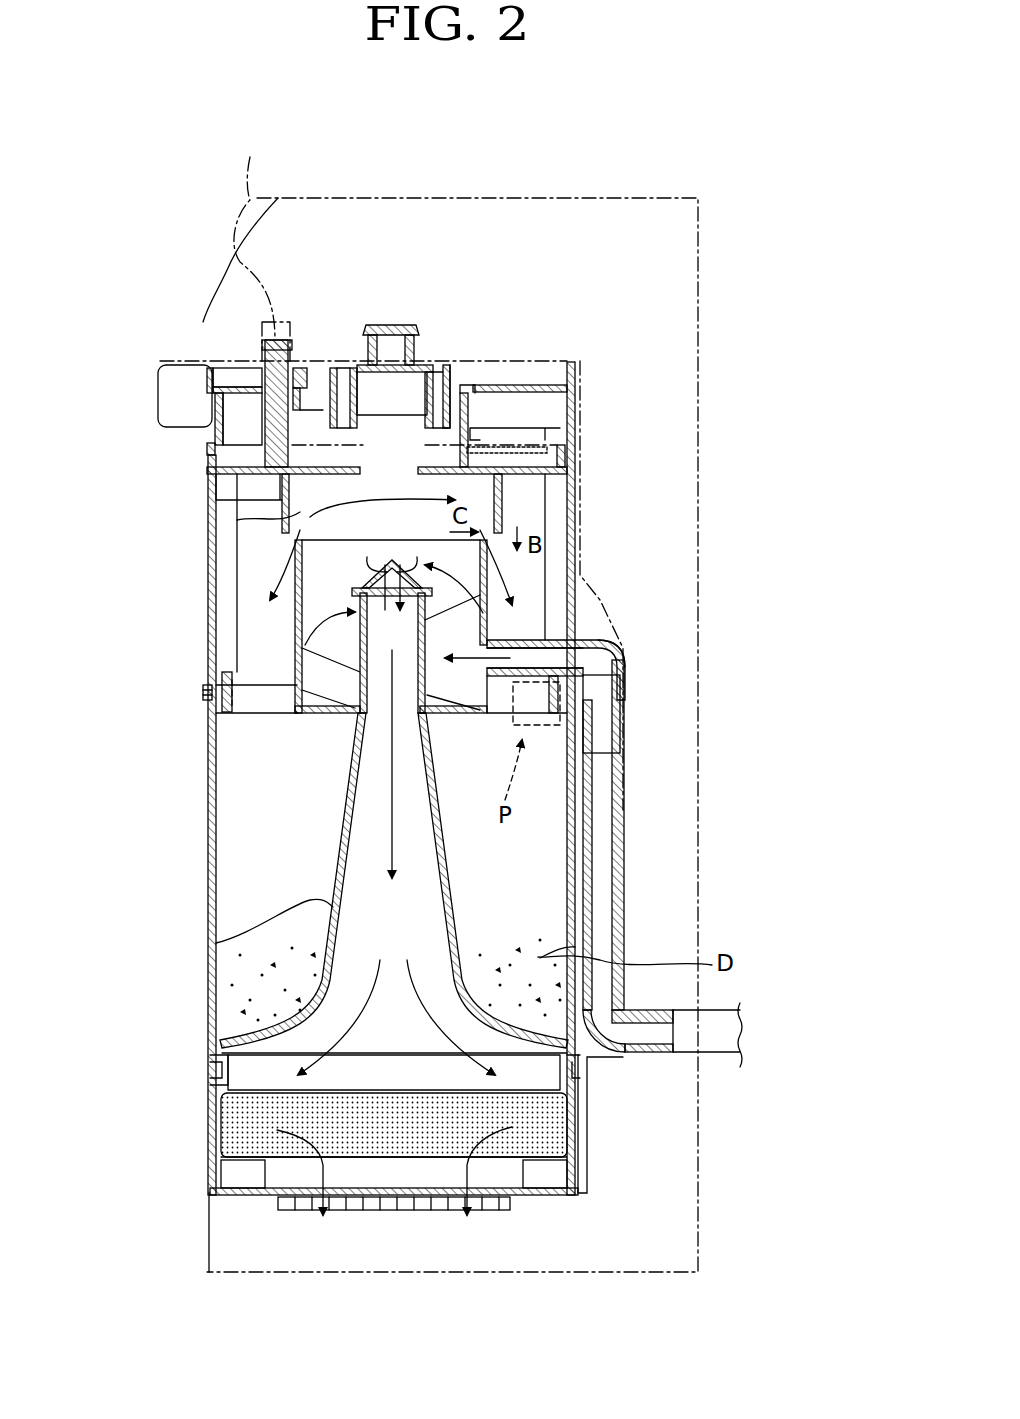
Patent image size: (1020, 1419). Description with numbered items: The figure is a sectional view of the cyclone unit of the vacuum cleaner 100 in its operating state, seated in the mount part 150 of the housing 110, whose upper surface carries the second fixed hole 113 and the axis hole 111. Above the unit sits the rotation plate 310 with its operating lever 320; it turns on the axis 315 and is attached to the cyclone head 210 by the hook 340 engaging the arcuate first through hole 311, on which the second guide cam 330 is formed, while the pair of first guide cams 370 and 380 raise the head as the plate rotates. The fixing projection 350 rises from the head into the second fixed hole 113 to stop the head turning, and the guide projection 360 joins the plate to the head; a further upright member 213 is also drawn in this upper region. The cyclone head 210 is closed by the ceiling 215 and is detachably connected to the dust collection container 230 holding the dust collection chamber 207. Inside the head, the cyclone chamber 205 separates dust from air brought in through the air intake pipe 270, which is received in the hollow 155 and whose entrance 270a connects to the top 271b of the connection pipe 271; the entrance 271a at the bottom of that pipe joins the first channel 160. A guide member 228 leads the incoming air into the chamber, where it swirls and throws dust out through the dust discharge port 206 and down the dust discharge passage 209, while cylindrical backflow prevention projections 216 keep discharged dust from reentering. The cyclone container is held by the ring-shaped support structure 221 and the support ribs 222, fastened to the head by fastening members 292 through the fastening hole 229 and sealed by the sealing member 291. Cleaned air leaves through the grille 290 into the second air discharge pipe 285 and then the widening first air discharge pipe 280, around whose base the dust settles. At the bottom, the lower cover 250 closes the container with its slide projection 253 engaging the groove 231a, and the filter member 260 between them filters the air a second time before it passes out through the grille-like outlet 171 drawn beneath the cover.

The vacuum cleaner 100 is at (672, 138).
The housing 110 is at (391, 471).
The second fixed hole 113 is at (256, 200).
The rotation plate 310 is at (215, 365).
The operating lever 320 is at (168, 388).
The fixing projection 350 is at (265, 420).
The guide projection 360 is at (357, 436).
The support post 213 is at (290, 343).
The axis 315 is at (410, 335).
The axis hole 111 is at (414, 352).
The second guide cam 330 is at (470, 412).
The first through hole 311 is at (480, 430).
The first guide cam 370 is at (560, 410).
The hook 340 is at (467, 452).
The first guide cam 380 is at (565, 455).
The ceiling 215 is at (300, 474).
The backflow prevention projections 216 is at (503, 500).
The mount part 150 is at (580, 545).
The cyclone head 210 is at (210, 650).
The dust collection container 230 is at (210, 885).
The cyclone chamber 205 is at (300, 600).
The dust discharge port 206 is at (300, 508).
The dust discharge passage 209 is at (258, 590).
The grille 290 is at (487, 578).
The guide member 228 is at (493, 615).
The air intake pipe 270 is at (588, 645).
The hollow 155 is at (617, 652).
The support ribs 222 is at (507, 720).
The fastening members 292 is at (550, 720).
The second air discharge pipe 285 is at (225, 673).
The fastening hole 229 is at (208, 700).
The support structure 221 is at (583, 688).
The sealing member 291 is at (590, 702).
The entrance 270a is at (620, 740).
The top 271b is at (605, 745).
The connection pipe 271 is at (620, 845).
The entrance 271a is at (675, 1035).
The first channel 160 is at (728, 1030).
The first air discharge pipe 280 is at (216, 943).
The dust collection chamber 207 is at (243, 848).
The groove 231a is at (222, 1057).
The slide projection 253 is at (215, 1072).
The filter member 260 is at (281, 1120).
The lower cover 250 is at (212, 1178).
The exhaust grill 171 is at (485, 1205).